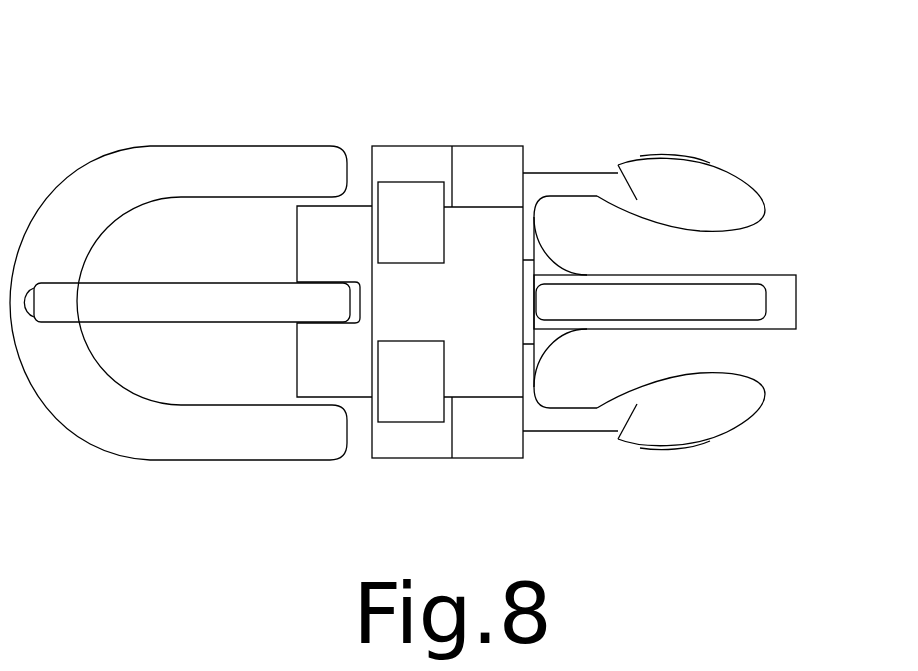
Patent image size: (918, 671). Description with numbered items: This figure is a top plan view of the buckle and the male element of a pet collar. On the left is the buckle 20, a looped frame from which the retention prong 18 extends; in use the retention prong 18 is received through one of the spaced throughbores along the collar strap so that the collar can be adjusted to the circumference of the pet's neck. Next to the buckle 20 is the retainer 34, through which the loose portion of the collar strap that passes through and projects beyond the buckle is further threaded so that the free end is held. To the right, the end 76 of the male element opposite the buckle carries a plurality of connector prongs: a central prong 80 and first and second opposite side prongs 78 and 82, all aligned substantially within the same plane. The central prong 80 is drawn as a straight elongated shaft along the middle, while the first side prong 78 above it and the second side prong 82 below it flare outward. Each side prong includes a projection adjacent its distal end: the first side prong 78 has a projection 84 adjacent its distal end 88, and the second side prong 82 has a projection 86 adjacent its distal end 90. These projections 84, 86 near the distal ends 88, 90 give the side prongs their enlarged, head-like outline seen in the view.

The buckle 20 is at (229, 114).
The retention prong 18 is at (130, 300).
The retainer 34 is at (420, 217).
The end of the male element 76 is at (527, 155).
The first side prong 78 is at (733, 202).
The central prong 80 is at (785, 303).
The second side prong 82 is at (727, 405).
The projection 84 is at (645, 160).
The projection 86 is at (633, 433).
The distal end 88 is at (695, 163).
The distal end 90 is at (683, 427).